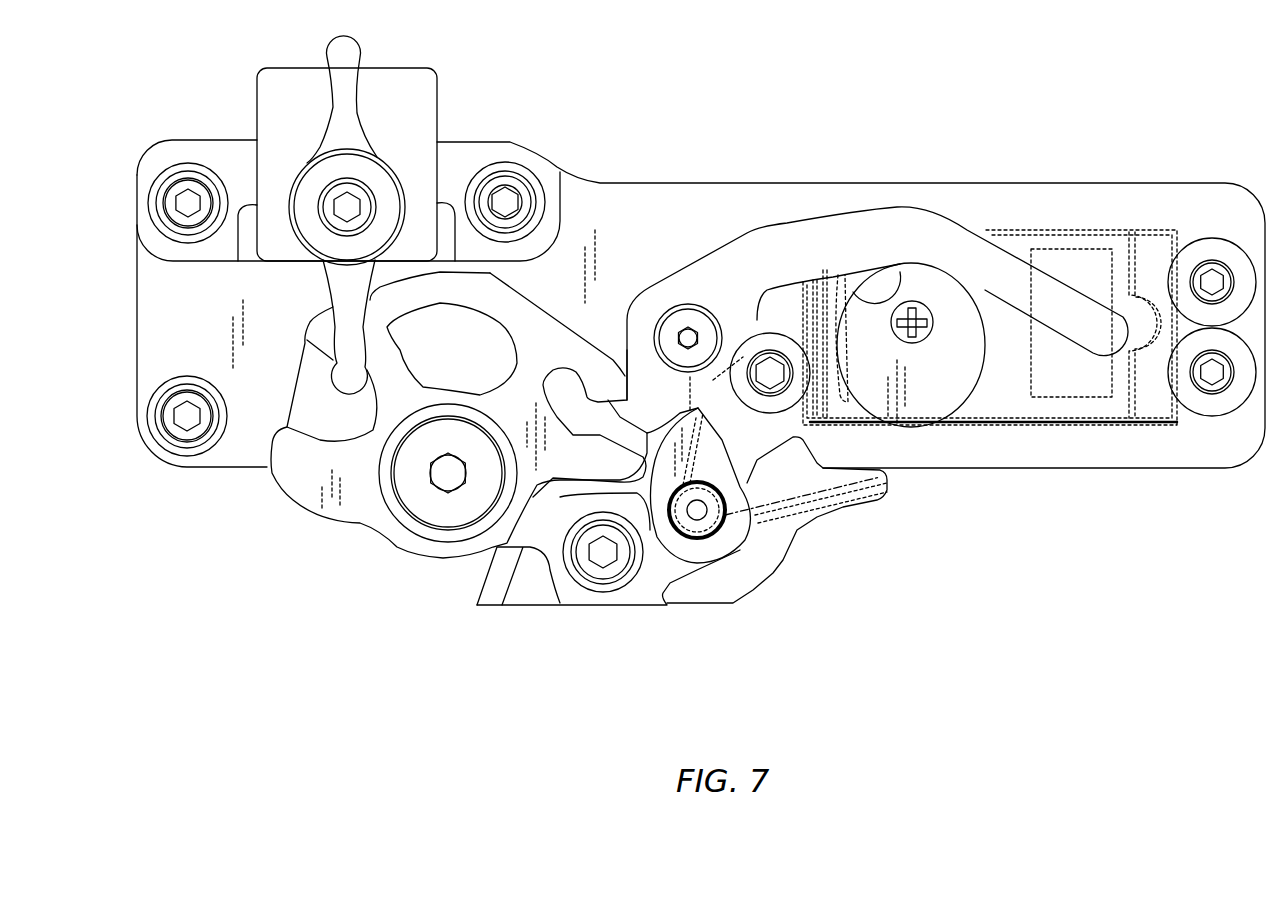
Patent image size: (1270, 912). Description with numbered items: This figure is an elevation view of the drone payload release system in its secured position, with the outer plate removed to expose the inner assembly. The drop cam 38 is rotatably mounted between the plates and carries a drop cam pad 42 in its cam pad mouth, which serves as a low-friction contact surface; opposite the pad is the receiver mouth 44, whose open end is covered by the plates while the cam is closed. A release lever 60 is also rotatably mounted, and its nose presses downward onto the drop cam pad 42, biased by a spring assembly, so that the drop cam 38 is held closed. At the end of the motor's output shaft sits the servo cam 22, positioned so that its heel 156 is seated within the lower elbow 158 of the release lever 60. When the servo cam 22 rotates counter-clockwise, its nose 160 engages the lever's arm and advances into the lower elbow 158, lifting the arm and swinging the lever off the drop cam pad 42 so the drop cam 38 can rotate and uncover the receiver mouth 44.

The servo cam 22 is at (975, 378).
The drop cam 38 is at (342, 527).
The drop cam pad 42 is at (588, 416).
The receiver mouth 44 is at (337, 420).
The release lever 60 is at (1053, 290).
The heel 156 is at (912, 282).
The lower elbow 158 is at (880, 292).
The nose 160 is at (913, 422).